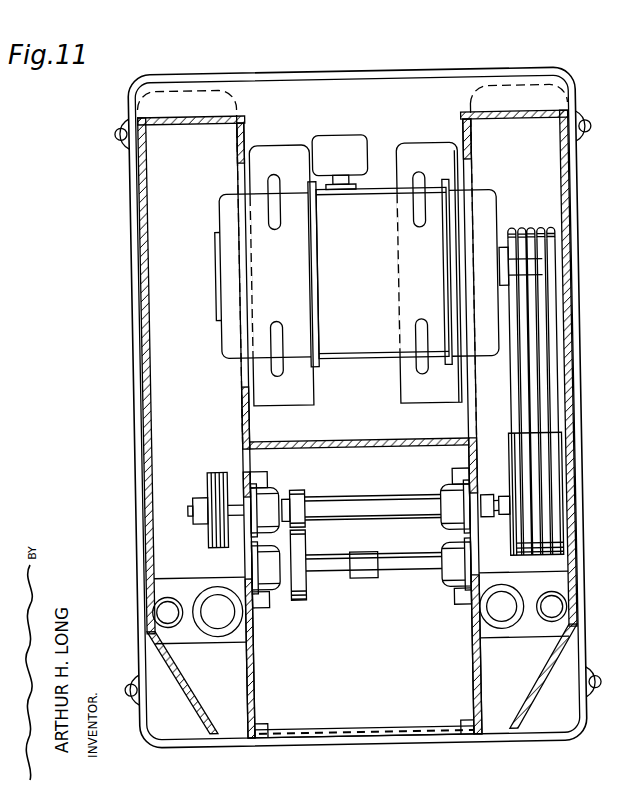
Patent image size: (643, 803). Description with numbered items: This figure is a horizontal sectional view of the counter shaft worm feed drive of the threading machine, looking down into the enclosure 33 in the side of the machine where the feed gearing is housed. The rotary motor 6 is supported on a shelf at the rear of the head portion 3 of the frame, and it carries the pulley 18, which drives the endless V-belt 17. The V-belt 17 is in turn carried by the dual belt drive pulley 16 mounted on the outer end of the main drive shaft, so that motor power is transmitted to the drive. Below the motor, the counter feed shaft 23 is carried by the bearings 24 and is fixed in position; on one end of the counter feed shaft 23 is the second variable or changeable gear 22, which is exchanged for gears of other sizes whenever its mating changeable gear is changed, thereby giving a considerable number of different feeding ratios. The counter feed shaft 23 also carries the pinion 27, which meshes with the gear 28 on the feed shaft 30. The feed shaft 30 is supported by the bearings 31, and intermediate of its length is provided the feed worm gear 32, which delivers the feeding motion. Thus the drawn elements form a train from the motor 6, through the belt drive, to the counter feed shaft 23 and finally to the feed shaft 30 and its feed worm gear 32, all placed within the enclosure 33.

The enclosure 33 is at (136, 371).
The head portion 3 is at (250, 416).
The rotary motor 6 is at (378, 307).
The pulley 18 is at (558, 243).
The endless V-belt 17 is at (546, 384).
The dual belt drive pulley 16 is at (561, 529).
The second variable or changeable gear 22 is at (214, 470).
The counter feed shaft 23 is at (326, 497).
The bearings 24 is at (261, 496).
The pinion 27 is at (303, 519).
The gear 28 is at (298, 544).
The feed shaft 30 is at (390, 564).
The bearings 31 is at (255, 563).
The feed worm gear 32 is at (354, 579).